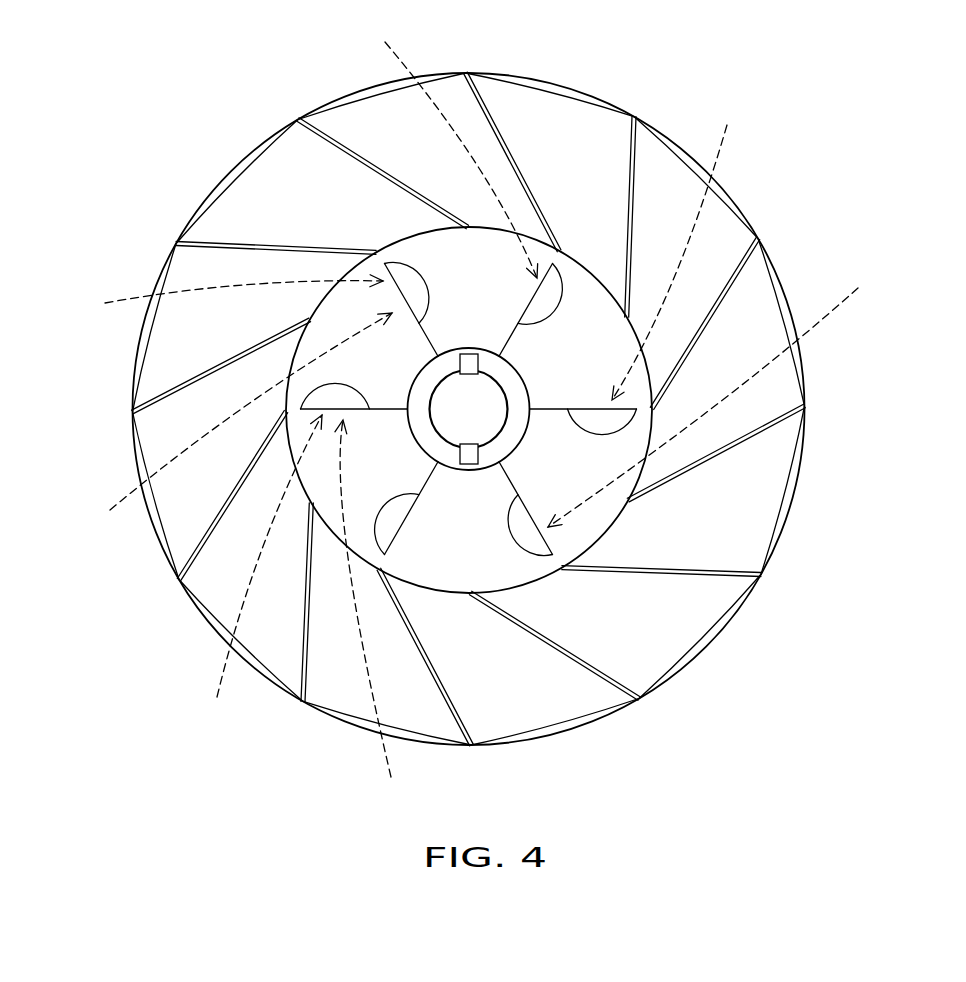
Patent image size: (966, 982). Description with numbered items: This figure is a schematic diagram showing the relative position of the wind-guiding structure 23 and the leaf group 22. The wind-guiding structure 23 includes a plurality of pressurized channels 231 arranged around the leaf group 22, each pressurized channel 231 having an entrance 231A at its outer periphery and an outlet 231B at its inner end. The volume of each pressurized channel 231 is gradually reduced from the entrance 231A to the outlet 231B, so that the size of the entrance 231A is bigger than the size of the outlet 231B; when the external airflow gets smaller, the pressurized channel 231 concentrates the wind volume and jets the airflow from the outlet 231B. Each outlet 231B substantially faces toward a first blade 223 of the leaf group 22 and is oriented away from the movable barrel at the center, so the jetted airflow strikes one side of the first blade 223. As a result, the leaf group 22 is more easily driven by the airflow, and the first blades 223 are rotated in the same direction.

The leaf group 22 is at (463, 484).
The wind-guiding structure 23 is at (808, 550).
The first blade 223 is at (412, 268).
The pressurized channel 231 is at (665, 206).
The entrance 231A is at (345, 97).
The outlet 231B is at (410, 233).